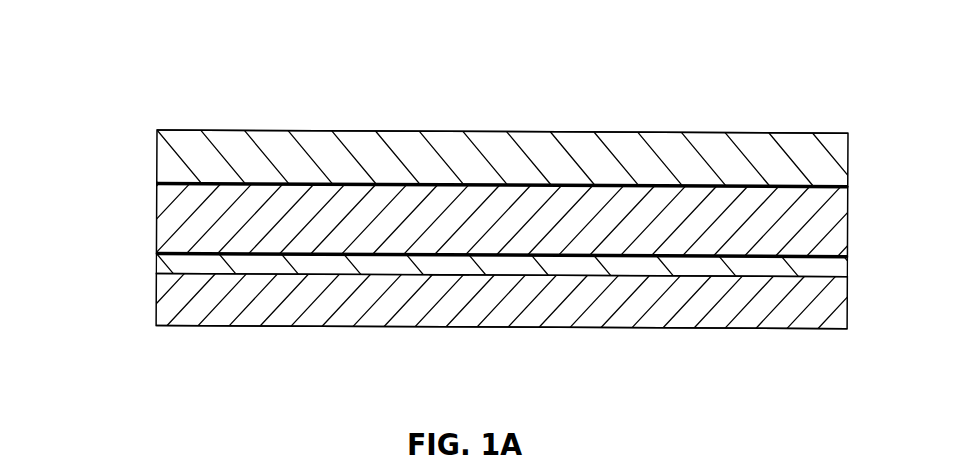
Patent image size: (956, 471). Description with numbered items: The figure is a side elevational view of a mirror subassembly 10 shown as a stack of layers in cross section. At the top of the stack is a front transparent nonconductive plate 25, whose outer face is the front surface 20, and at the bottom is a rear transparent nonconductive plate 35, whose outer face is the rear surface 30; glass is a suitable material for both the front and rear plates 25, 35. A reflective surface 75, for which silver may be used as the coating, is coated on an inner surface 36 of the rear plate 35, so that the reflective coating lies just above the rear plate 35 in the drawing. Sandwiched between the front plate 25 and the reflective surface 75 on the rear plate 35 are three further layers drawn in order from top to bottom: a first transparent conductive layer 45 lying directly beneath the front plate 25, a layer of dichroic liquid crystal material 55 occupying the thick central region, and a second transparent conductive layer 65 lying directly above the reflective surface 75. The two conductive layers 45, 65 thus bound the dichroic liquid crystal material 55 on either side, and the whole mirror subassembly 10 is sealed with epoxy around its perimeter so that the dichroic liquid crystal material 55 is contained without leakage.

The mirror subassembly 10 is at (860, 96).
The front surface 20 is at (430, 128).
The front transparent nonconductive plate 25 is at (167, 155).
The first transparent conductive layer 45 is at (157, 184).
The layer of dichroic liquid crystal material 55 is at (167, 217).
The second transparent conductive layer 65 is at (158, 253).
The reflective surface 75 is at (185, 263).
The rear transparent nonconductive plate 35 is at (157, 302).
The rear surface 30 is at (357, 327).
The inner surface 36 is at (450, 267).